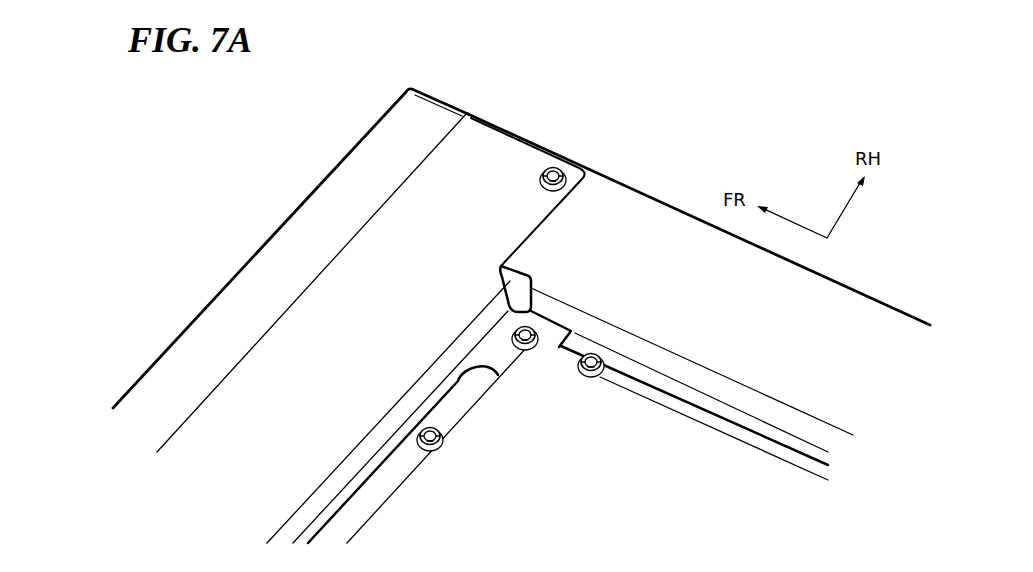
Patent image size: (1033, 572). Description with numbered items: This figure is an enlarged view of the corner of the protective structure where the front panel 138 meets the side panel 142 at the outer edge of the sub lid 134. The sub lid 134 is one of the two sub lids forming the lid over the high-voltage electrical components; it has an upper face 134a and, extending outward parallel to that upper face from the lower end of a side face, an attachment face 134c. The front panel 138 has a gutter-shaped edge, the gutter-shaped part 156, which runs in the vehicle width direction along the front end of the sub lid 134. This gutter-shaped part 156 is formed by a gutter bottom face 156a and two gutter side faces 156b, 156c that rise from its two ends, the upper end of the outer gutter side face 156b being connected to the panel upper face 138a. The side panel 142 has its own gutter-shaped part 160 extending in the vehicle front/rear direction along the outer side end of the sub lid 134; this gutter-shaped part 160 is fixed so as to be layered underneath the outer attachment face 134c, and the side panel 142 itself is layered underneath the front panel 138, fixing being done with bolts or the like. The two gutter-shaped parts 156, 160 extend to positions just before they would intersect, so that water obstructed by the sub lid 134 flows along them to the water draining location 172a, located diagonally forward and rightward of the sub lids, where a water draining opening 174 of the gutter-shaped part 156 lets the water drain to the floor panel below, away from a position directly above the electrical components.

The sub lid 134 is at (567, 480).
The upper face 134a is at (487, 430).
The attachment face 134c is at (362, 512).
The front panel 138 is at (383, 111).
The panel upper face 138a is at (534, 158).
The side panel 142 is at (866, 289).
The gutter-shaped part 156 is at (385, 428).
The gutter bottom face 156a is at (490, 347).
The outer gutter side face 156b is at (432, 380).
The gutter side face 156c is at (568, 330).
The gutter-shaped part 160 is at (697, 396).
The water draining location 172a is at (604, 336).
The water draining opening 174 is at (528, 278).